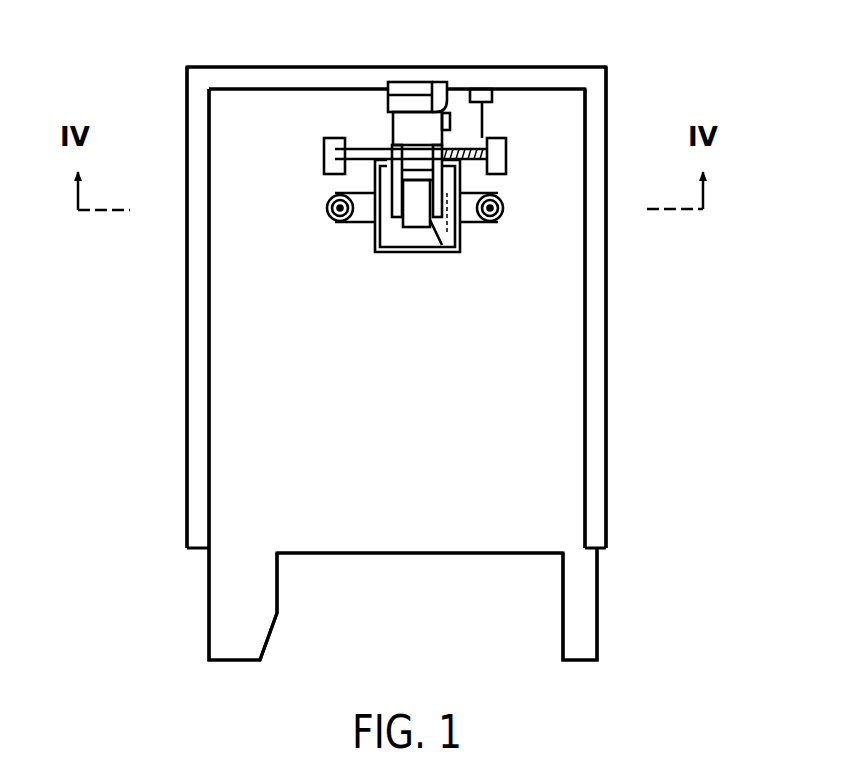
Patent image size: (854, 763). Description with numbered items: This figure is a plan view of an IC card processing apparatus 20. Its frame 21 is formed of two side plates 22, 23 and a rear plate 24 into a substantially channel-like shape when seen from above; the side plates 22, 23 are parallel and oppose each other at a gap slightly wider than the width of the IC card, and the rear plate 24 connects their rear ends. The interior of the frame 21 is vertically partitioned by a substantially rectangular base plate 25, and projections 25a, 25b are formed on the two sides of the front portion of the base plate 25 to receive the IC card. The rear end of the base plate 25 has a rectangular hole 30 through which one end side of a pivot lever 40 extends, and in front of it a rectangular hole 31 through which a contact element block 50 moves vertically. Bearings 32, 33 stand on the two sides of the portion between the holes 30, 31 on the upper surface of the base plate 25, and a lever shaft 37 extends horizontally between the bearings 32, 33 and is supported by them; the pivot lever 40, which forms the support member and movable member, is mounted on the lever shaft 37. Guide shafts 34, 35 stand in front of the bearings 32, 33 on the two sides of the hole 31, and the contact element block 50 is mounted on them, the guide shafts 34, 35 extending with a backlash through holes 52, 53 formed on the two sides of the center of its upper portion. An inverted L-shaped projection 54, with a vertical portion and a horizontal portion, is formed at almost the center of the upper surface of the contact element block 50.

The IC card processing apparatus 20 is at (614, 92).
The frame 21 is at (592, 306).
The side plate 22 is at (187, 360).
The side plate 23 is at (607, 378).
The rear plate 24 is at (226, 78).
The base plate 25 is at (565, 481).
The projection 25a is at (217, 593).
The projection 25b is at (589, 605).
The rectangular hole 30 is at (434, 95).
The rectangular hole 31 is at (412, 247).
The bearing 32 is at (345, 138).
The bearing 33 is at (487, 143).
The guide shaft 34 is at (334, 216).
The guide shaft 35 is at (497, 221).
The lever shaft 37 is at (363, 148).
The pivot lever 40 is at (396, 137).
The contact element block 50 is at (388, 232).
The hole 52 is at (334, 200).
The hole 53 is at (502, 205).
The inverted L-shaped projection 54 is at (450, 252).